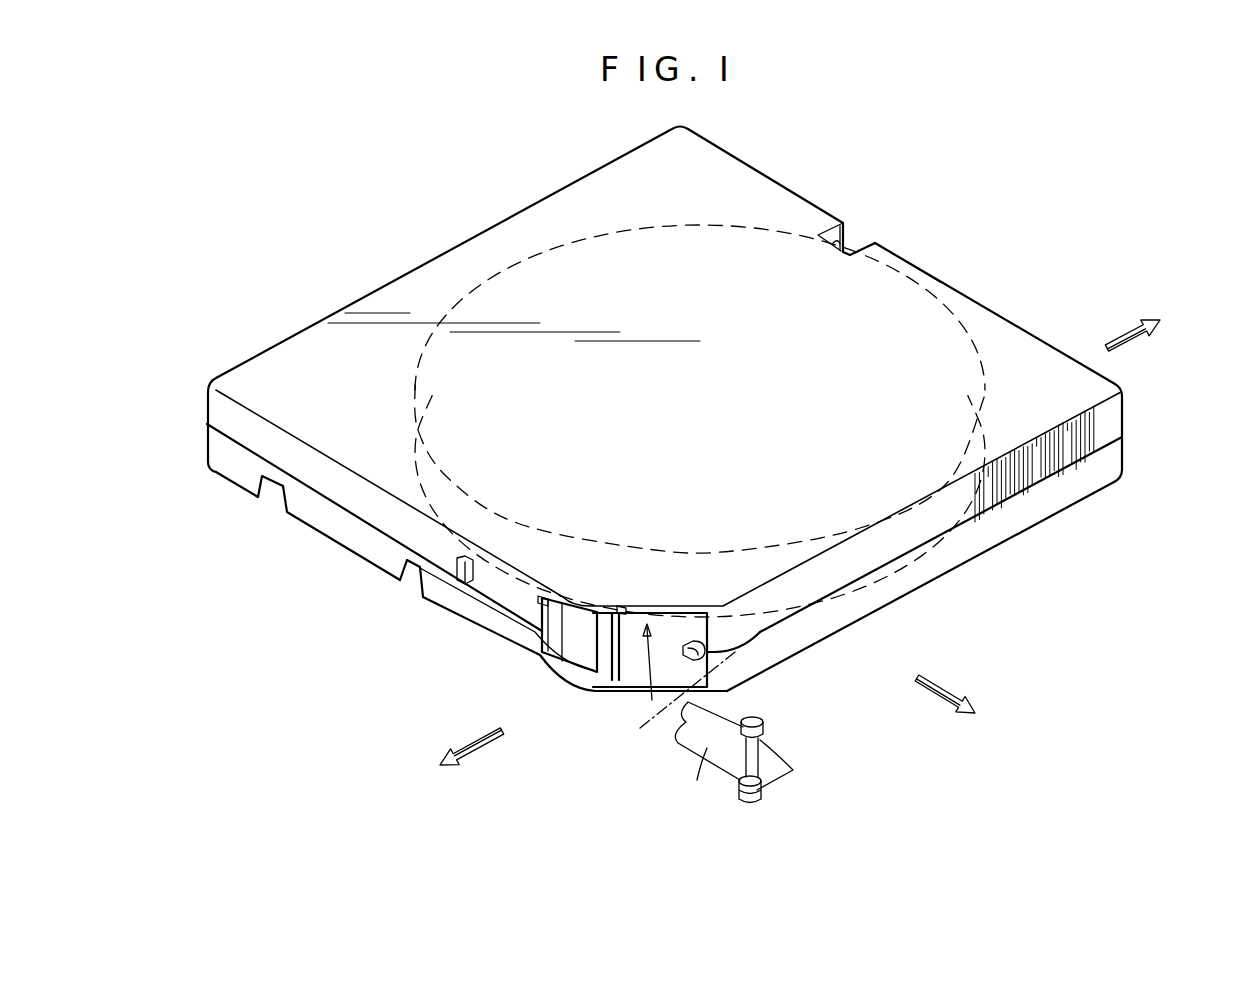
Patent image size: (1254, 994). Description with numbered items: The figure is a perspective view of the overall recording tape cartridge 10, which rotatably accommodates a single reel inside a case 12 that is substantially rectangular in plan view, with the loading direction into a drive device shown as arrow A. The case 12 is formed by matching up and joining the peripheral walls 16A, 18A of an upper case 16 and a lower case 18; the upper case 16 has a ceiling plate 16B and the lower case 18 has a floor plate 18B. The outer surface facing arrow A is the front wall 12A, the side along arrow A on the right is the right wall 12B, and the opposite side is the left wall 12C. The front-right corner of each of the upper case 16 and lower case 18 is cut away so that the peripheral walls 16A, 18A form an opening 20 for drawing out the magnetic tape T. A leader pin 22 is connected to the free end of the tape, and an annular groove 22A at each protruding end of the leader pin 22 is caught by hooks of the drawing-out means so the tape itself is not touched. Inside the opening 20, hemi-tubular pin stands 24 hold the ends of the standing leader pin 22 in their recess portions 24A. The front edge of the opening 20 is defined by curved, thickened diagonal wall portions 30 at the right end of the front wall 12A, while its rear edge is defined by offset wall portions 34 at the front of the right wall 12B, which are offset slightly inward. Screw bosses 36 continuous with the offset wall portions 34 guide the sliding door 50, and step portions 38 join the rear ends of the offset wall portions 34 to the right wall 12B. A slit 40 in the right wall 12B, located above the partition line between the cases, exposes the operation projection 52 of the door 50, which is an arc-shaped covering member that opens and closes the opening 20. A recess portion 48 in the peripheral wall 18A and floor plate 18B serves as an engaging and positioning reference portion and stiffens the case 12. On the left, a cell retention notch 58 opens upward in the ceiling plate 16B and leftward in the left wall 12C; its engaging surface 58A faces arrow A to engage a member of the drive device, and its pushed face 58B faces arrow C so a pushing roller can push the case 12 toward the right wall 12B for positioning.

The recording tape cartridge 10 is at (924, 231).
The case 12 is at (1195, 392).
The front wall 12A is at (1060, 546).
The right wall 12B is at (268, 547).
The left wall 12C is at (948, 286).
The upper case 16 is at (1128, 406).
The peripheral wall of upper case 16A is at (387, 510).
The ceiling plate 16B is at (1007, 333).
The lower case 18 is at (1128, 452).
The peripheral wall of lower case 18A is at (380, 557).
The floor plate 18B is at (693, 690).
The opening 20 is at (636, 665).
The leader pin 22 is at (762, 802).
The annular groove 22A is at (848, 785).
The pin stand 24 is at (710, 645).
The recess portion of pin stand 24A is at (693, 640).
The diagonal wall portion 30 is at (743, 641).
The offset wall portion 34 is at (573, 655).
The screw boss 36 is at (608, 640).
The step portion 38 is at (547, 628).
The slit 40 is at (513, 597).
The recess portion 48 is at (417, 582).
The door 50 is at (500, 580).
The operation projection 52 is at (477, 563).
The cell retention notch 58 is at (857, 247).
The engaging surface 58A is at (843, 222).
The pushed face 58B is at (830, 247).